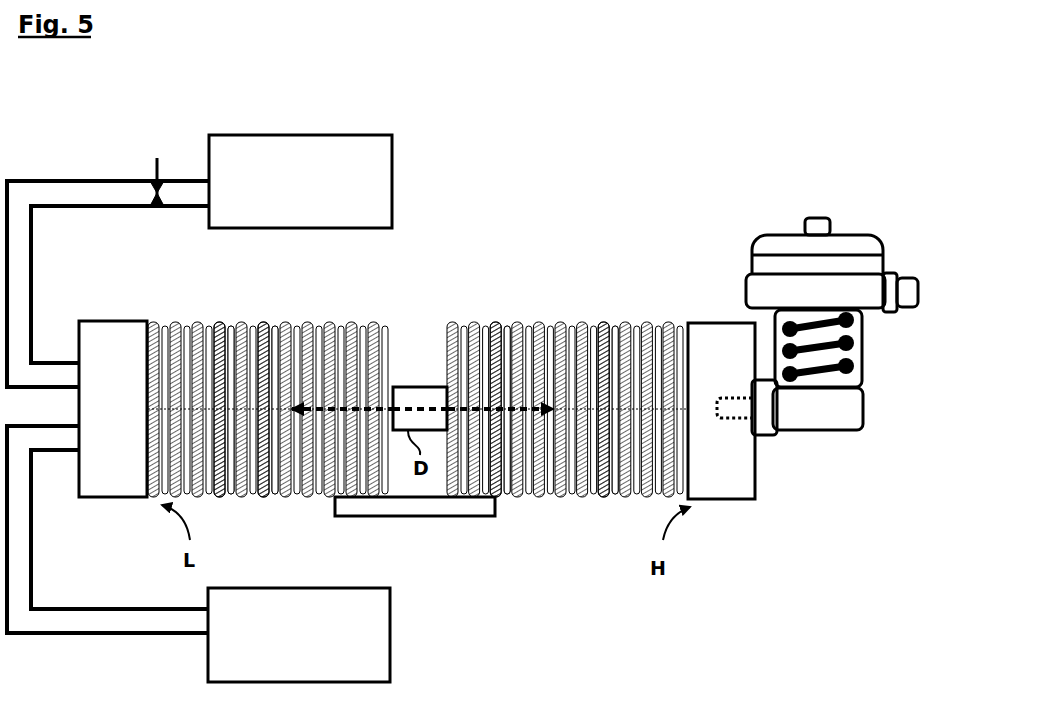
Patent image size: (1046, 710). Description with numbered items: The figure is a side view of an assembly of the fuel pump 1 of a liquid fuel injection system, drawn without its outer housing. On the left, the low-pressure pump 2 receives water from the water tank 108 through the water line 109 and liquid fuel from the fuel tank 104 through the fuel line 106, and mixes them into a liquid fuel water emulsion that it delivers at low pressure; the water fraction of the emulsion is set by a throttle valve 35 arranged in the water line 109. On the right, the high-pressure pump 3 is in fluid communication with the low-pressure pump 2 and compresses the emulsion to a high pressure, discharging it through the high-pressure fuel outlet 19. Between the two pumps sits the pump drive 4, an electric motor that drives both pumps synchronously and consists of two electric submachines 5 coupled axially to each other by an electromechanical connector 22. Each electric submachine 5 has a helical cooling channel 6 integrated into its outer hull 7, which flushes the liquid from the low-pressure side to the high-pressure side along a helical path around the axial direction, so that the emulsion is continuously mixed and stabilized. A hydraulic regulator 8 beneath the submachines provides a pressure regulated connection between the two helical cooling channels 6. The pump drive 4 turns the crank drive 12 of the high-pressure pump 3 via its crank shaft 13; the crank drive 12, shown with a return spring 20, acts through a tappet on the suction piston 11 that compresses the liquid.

The fuel pump 1 is at (670, 190).
The low-pressure pump 2 is at (120, 330).
The high-pressure pump 3 is at (718, 292).
The pump drive 4 is at (422, 287).
The electric submachine 5 is at (290, 310).
The helical cooling channel 6 is at (255, 497).
The outer hull 7 is at (228, 330).
The hydraulic regulator 8 is at (450, 503).
The suction piston 11 is at (868, 329).
The crank drive 12 is at (815, 415).
The crank shaft 13 is at (736, 411).
The high-pressure fuel outlet 19 is at (903, 271).
The return spring 20 is at (855, 342).
The electromechanical connector 22 is at (425, 386).
The throttle valve 35 is at (162, 172).
The fuel tank 104 is at (378, 633).
The fuel line 106 is at (80, 607).
The water tank 108 is at (392, 157).
The water line 109 is at (50, 178).